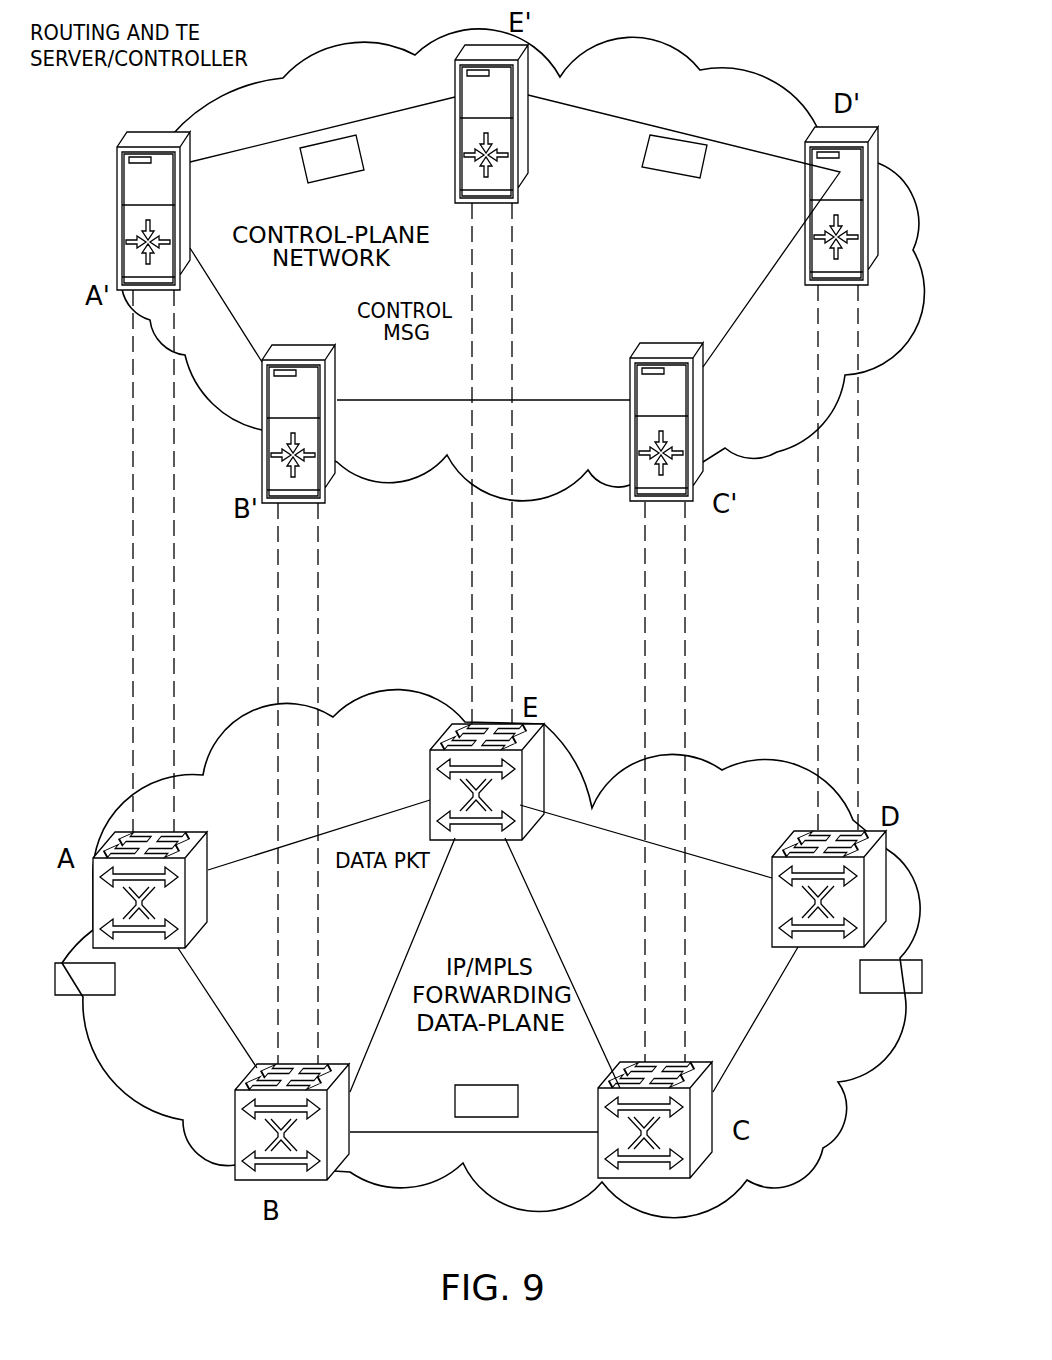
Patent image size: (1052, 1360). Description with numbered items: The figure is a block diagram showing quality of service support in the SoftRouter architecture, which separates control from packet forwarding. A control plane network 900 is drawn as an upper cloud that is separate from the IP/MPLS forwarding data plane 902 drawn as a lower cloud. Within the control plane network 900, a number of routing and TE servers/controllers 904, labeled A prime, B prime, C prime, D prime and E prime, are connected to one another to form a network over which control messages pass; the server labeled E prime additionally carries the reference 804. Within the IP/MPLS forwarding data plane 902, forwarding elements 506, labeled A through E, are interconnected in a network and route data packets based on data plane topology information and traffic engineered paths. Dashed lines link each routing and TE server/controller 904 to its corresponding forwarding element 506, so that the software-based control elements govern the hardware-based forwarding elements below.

The control plane network 900 is at (645, 38).
The IP/MPLS forwarding data plane 902 is at (823, 1148).
The routing and TE server/controller 904 is at (117, 137).
The routing and TE server/controller E' 804 is at (528, 155).
The forwarding element 506 is at (192, 833).